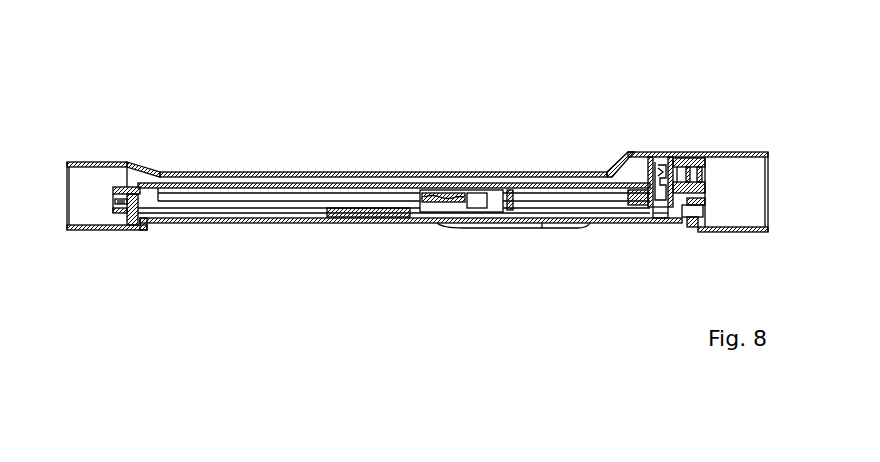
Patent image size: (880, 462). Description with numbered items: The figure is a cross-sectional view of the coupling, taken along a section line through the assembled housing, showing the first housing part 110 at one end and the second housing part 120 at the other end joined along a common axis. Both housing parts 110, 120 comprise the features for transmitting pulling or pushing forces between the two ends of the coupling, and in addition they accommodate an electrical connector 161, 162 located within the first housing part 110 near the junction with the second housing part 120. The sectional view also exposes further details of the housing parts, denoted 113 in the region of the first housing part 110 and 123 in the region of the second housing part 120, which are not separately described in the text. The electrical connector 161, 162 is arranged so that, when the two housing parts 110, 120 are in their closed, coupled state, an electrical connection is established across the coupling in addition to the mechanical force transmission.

The first housing part 110 is at (733, 173).
The cap notch 113 is at (698, 212).
The second housing part 120 is at (102, 177).
The seal 123 is at (128, 205).
The electrical connector 161 is at (662, 223).
The electrical connector 162 is at (645, 172).